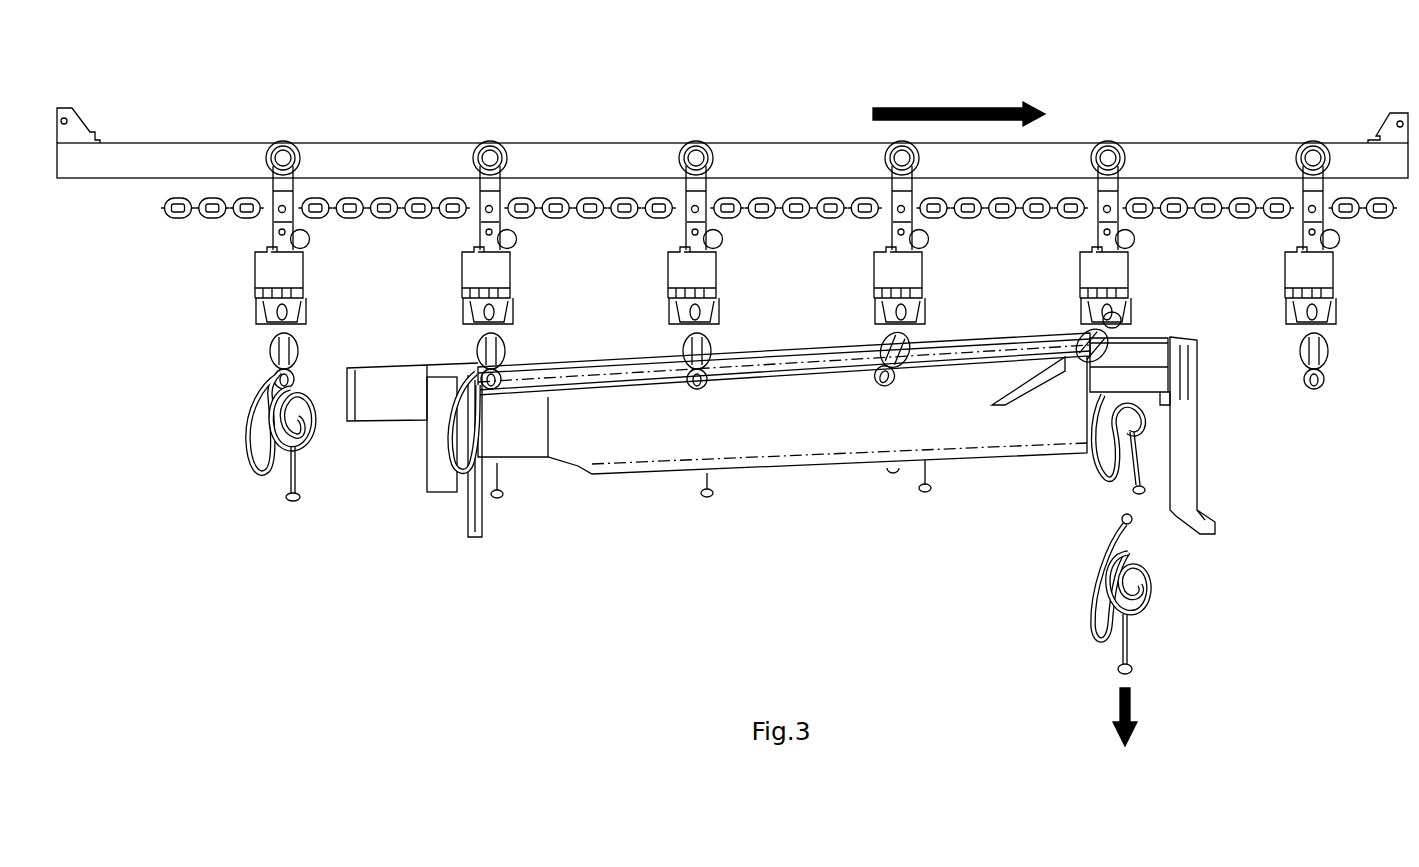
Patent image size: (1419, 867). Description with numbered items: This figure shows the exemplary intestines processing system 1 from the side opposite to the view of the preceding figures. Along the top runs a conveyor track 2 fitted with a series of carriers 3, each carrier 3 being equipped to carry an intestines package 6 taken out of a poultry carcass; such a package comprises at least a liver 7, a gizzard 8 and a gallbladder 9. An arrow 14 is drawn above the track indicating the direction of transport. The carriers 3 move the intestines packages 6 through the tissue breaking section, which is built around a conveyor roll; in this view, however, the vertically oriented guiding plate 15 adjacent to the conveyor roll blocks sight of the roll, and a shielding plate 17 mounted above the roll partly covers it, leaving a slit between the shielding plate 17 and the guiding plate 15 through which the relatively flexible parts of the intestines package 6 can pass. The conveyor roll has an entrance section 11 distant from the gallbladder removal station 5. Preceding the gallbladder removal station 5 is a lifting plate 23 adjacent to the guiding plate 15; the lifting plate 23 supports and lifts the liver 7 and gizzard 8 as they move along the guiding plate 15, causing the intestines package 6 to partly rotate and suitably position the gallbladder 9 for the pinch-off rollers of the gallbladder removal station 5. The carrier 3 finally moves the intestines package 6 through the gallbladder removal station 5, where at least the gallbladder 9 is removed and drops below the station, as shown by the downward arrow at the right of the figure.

The intestines processing system 1 is at (516, 108).
The conveyor track 2 is at (358, 148).
The carrier 3 is at (308, 282).
The gallbladder removal station 5 is at (1158, 330).
The intestines package 6 is at (258, 405).
The liver 7 is at (1332, 350).
The gizzard 8 is at (1326, 396).
The gallbladder 9 is at (1137, 522).
The entrance section 11 is at (402, 442).
The conveying direction 14 is at (948, 104).
The guiding plate 15 is at (768, 413).
The shielding plate 17 is at (600, 362).
The lifting plate 23 is at (1017, 402).